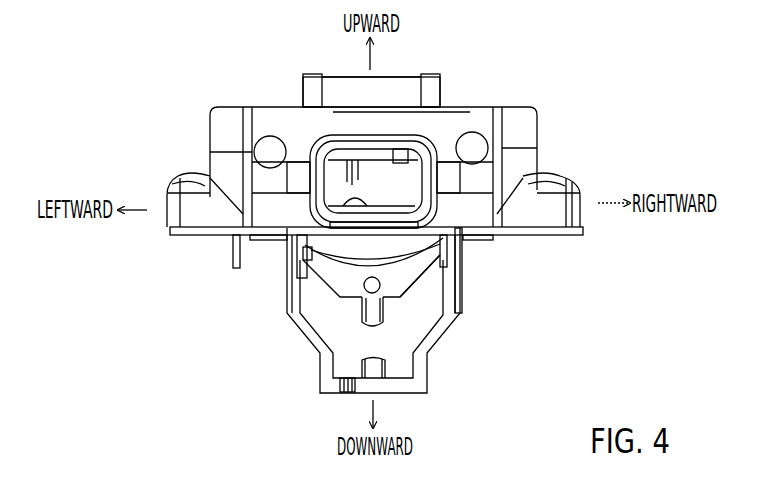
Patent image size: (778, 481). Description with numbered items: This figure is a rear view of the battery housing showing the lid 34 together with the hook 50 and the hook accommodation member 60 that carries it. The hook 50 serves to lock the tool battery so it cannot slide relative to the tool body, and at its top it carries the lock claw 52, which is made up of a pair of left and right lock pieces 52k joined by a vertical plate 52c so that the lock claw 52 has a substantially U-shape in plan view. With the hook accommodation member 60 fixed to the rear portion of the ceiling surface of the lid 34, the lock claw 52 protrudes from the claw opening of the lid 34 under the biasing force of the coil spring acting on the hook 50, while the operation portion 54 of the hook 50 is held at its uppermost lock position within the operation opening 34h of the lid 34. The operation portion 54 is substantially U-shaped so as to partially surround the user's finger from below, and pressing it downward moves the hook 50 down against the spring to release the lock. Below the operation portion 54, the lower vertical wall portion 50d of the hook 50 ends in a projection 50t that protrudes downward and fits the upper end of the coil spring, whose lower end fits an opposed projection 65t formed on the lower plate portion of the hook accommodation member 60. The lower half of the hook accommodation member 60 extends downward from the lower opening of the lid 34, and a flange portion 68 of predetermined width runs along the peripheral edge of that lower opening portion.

The lid 34 is at (555, 132).
The operation opening 34h is at (428, 140).
The lock claw 52 is at (391, 84).
The vertical plate 52c is at (352, 87).
The lock pieces 52k is at (307, 90).
The hook 50 is at (330, 298).
The lower vertical wall portion 50d is at (403, 241).
The projection 50t is at (373, 310).
The operation portion 54 is at (330, 223).
The hook accommodation member 60 is at (466, 285).
The projection 65t is at (372, 368).
The flange portion 68 is at (330, 383).